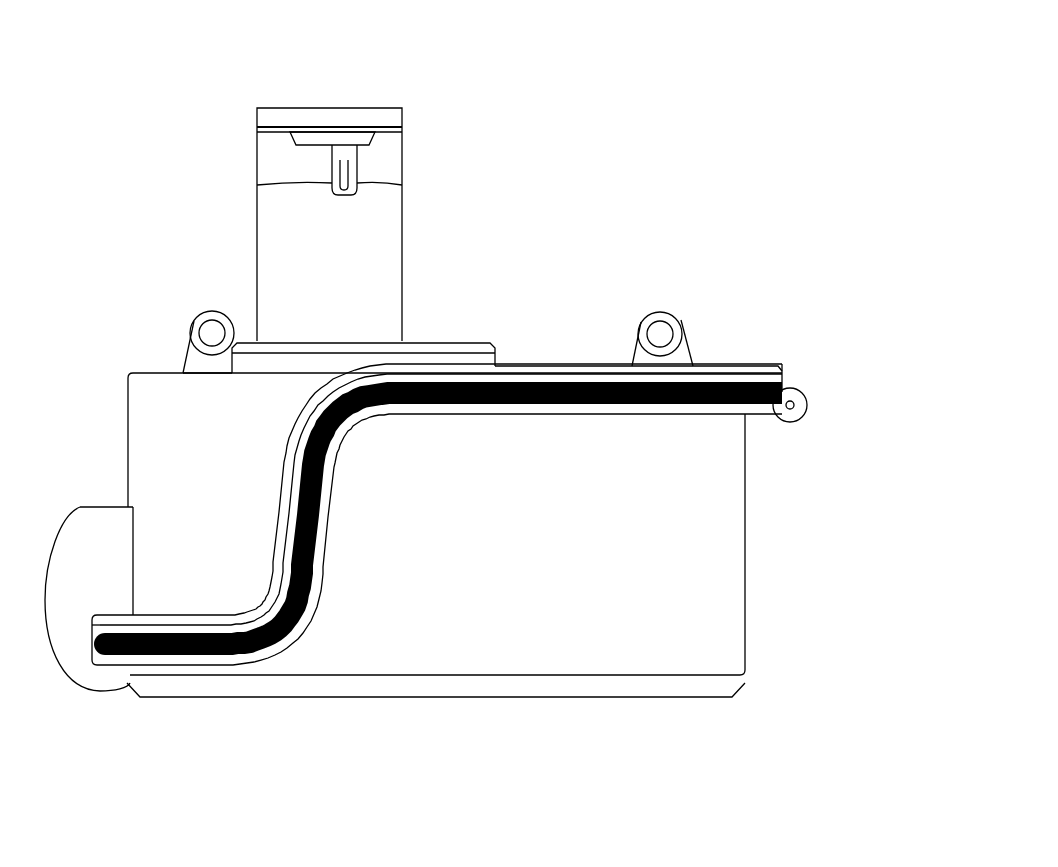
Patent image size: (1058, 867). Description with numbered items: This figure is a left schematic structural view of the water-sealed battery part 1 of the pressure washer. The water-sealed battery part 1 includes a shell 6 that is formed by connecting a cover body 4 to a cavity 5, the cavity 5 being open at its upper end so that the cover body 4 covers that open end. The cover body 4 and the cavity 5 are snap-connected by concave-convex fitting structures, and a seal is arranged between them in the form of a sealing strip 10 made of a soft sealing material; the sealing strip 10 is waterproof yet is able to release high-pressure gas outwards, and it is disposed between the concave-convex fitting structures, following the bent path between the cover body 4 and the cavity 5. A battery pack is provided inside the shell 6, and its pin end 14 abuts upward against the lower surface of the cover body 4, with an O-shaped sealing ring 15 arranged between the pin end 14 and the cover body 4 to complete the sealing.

The water-sealed battery part 1 is at (137, 348).
The cover body 4 is at (765, 370).
The cavity 5 is at (715, 462).
The shell 6 is at (918, 308).
The sealing strip 10 is at (510, 383).
The pin end 14 is at (347, 153).
The O-shaped sealing ring 15 is at (320, 140).